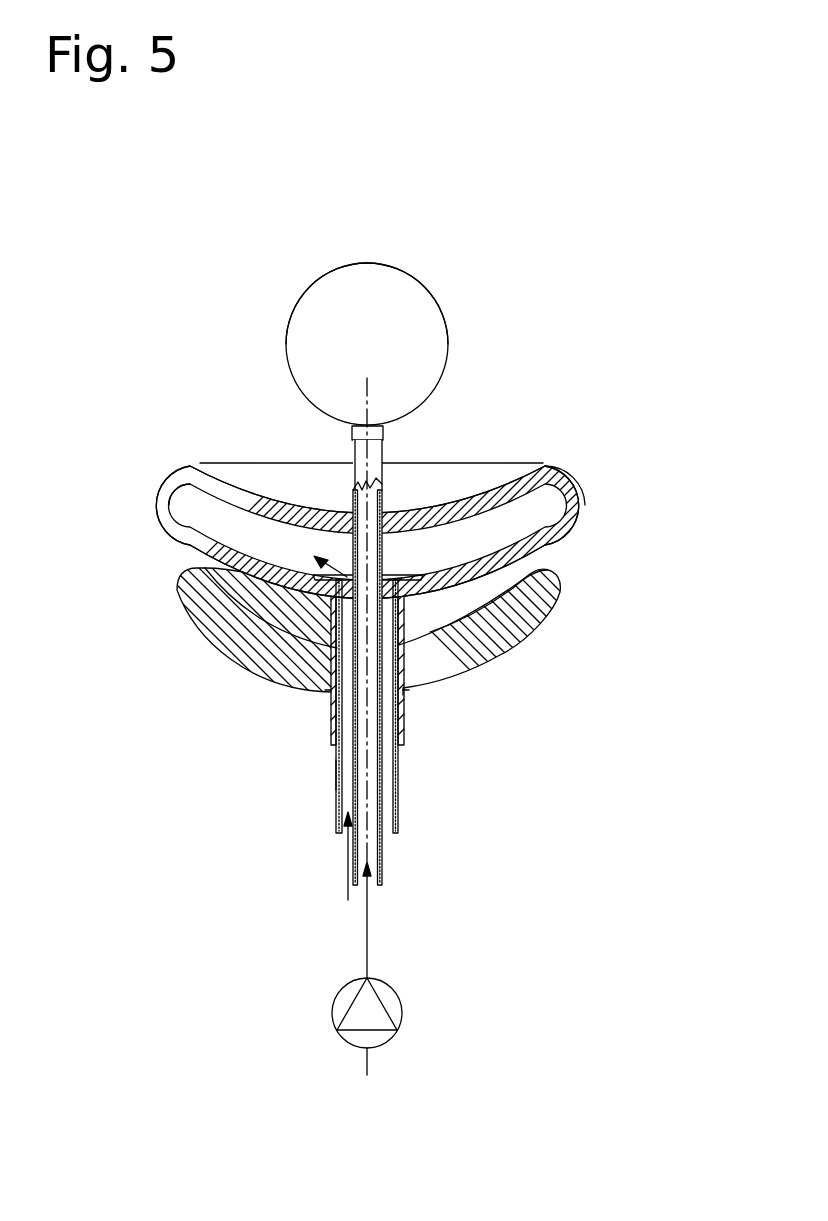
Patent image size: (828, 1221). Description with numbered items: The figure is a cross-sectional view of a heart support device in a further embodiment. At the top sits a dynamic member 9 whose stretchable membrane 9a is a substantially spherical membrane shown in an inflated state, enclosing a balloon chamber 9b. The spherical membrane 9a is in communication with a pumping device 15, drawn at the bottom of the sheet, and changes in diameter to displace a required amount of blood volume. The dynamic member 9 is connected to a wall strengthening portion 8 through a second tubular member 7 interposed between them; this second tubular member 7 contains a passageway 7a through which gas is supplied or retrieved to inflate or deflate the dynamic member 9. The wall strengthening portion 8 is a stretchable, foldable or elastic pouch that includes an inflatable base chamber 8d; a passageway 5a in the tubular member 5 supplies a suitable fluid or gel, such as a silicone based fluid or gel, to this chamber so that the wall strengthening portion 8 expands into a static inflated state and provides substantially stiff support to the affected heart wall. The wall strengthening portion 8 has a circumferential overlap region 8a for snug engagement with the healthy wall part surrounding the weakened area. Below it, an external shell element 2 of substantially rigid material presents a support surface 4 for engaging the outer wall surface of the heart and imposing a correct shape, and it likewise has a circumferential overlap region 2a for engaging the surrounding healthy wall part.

The external shell element 2 is at (543, 618).
The circumferential overlap region 2a is at (547, 585).
The support surface 4 is at (467, 640).
The tubular member 5 is at (340, 627).
The passageway 5a is at (347, 771).
The second tubular member 7 is at (383, 447).
The passageway 7a is at (373, 498).
The wall strengthening portion 8 is at (580, 506).
The circumferential overlap region 8a is at (570, 470).
The inflatable base chamber 8d is at (185, 503).
The dynamic member 9 is at (387, 272).
The stretchable membrane 9a is at (323, 283).
The balloon chamber 9b is at (420, 333).
The pumping device 15 is at (377, 1012).